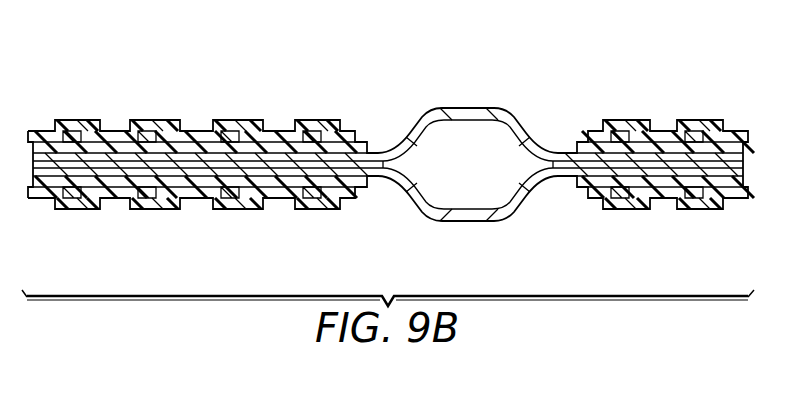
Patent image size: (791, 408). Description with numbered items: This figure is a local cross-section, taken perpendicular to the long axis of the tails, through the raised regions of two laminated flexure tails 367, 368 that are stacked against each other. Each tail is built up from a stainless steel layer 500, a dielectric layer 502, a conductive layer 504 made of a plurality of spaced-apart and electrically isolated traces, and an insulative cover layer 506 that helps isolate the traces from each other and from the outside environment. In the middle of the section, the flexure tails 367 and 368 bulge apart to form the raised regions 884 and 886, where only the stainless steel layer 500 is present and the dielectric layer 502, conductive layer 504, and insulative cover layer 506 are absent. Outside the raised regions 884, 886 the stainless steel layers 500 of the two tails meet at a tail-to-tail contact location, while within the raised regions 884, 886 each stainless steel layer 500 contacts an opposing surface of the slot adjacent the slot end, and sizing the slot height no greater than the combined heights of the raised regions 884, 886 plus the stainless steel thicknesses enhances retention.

The dielectric layer 502 is at (30, 128).
The conductive layer 504 is at (157, 120).
The insulative cover layer 506 is at (238, 120).
The stainless steel layer 500 is at (378, 148).
The raised region 884 is at (458, 107).
The raised region 886 is at (470, 208).
The flexure tail 367 is at (283, 114).
The flexure tail 368 is at (283, 216).